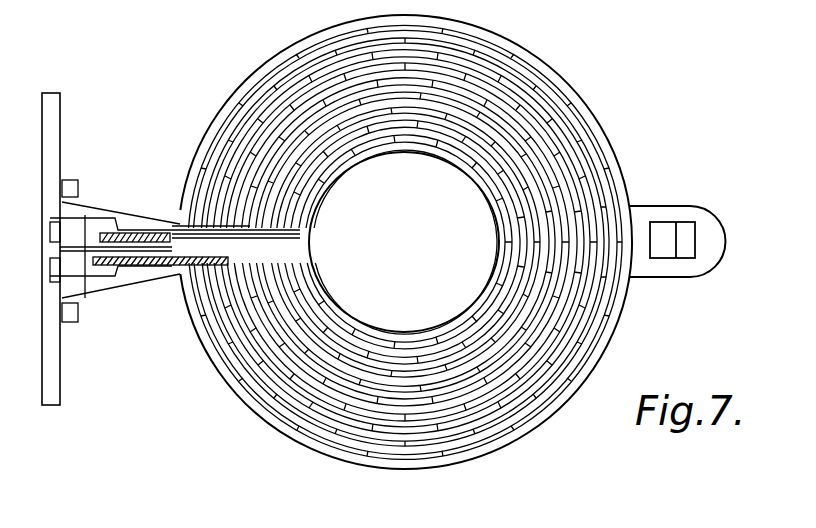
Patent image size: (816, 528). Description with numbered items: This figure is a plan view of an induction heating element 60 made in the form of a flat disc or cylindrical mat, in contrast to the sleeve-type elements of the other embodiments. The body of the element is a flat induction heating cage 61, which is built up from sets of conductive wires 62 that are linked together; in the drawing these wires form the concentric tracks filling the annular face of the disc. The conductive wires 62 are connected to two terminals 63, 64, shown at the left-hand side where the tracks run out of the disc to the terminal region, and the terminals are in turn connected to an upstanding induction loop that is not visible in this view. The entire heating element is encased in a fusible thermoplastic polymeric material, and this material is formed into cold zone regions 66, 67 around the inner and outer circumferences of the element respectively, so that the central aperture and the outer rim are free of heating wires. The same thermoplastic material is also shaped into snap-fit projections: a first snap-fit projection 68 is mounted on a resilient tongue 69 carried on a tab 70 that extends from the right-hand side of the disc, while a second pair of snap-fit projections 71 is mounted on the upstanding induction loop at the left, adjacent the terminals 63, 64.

The induction heating element 60 is at (630, 98).
The flat induction heating cage 61 is at (476, 430).
The conductive wires 62 is at (266, 416).
The terminal 63 is at (130, 268).
The terminal 64 is at (135, 232).
The cold zone region 66 is at (492, 272).
The cold zone region 67 is at (556, 410).
The snap-fit projection 68 is at (686, 225).
The resilient tongue 69 is at (660, 245).
The tab 70 is at (712, 262).
The snap-fit projections 71 is at (68, 180).